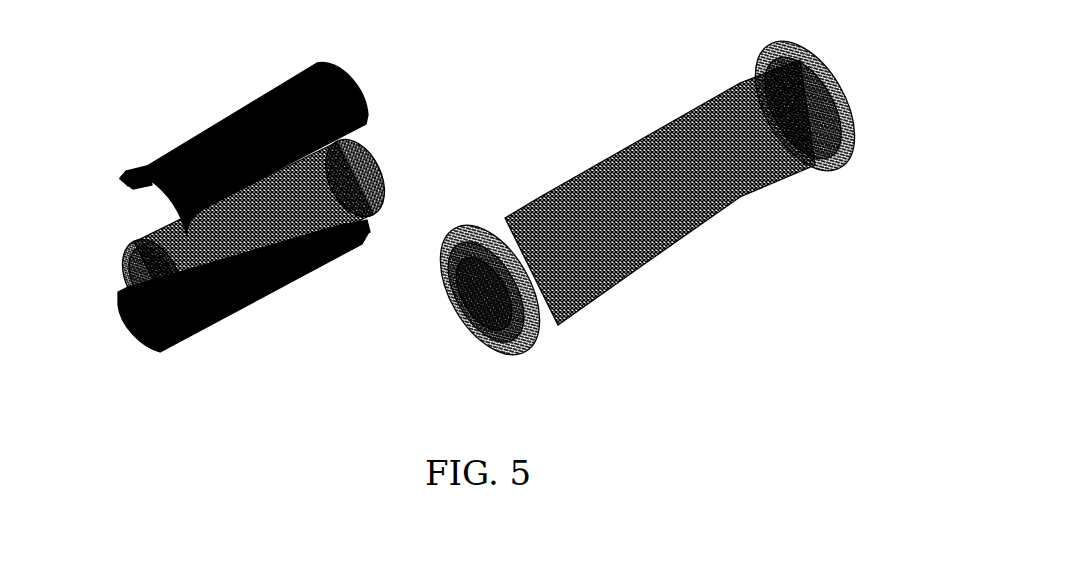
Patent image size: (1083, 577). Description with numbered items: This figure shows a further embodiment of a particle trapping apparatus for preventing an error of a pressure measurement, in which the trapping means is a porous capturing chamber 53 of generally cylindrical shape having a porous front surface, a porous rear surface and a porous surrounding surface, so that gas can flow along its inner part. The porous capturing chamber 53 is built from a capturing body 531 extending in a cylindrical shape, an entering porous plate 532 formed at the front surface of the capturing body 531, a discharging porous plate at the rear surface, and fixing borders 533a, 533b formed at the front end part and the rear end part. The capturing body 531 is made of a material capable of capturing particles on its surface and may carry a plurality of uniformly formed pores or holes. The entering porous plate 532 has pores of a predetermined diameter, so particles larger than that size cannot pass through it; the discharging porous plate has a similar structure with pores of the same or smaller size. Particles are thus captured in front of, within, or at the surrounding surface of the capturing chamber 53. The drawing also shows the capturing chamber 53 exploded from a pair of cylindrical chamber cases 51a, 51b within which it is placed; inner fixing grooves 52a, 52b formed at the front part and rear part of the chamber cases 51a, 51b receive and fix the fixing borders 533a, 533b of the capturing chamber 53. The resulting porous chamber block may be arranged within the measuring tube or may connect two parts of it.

The chamber case 51a is at (285, 83).
The chamber case 51b is at (263, 297).
The inner fixing groove 52a is at (118, 182).
The inner fixing groove 52b is at (369, 224).
The porous capturing chamber 53 is at (114, 228).
The capturing body 531 is at (685, 137).
The entering porous plate 532 is at (470, 298).
The fixing border 533a is at (460, 238).
The fixing border 533b is at (822, 58).